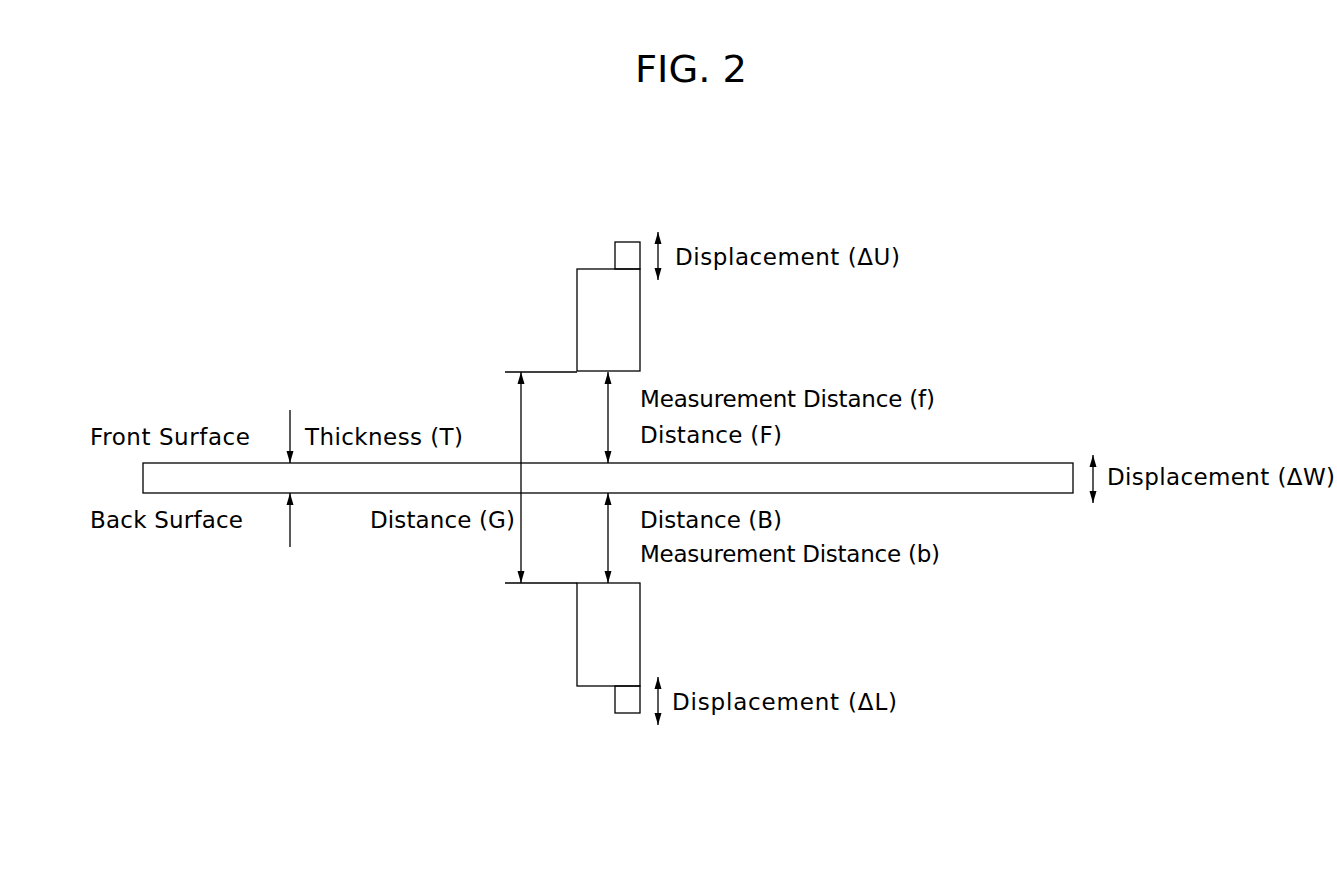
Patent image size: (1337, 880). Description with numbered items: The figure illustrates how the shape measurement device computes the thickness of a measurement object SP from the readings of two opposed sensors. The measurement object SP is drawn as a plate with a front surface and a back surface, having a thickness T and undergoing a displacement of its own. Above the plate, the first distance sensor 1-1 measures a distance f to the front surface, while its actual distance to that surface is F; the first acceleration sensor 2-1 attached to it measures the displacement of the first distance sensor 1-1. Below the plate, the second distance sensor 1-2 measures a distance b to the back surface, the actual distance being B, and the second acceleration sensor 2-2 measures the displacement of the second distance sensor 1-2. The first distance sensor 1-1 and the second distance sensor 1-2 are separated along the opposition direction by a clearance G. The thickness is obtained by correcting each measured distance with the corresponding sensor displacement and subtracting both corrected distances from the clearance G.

The first distance sensor 1-1 is at (598, 269).
The first acceleration sensor 2-1 is at (627, 242).
The second distance sensor 1-2 is at (598, 686).
The second acceleration sensor 2-2 is at (627, 713).
The measurement object SP is at (1013, 463).